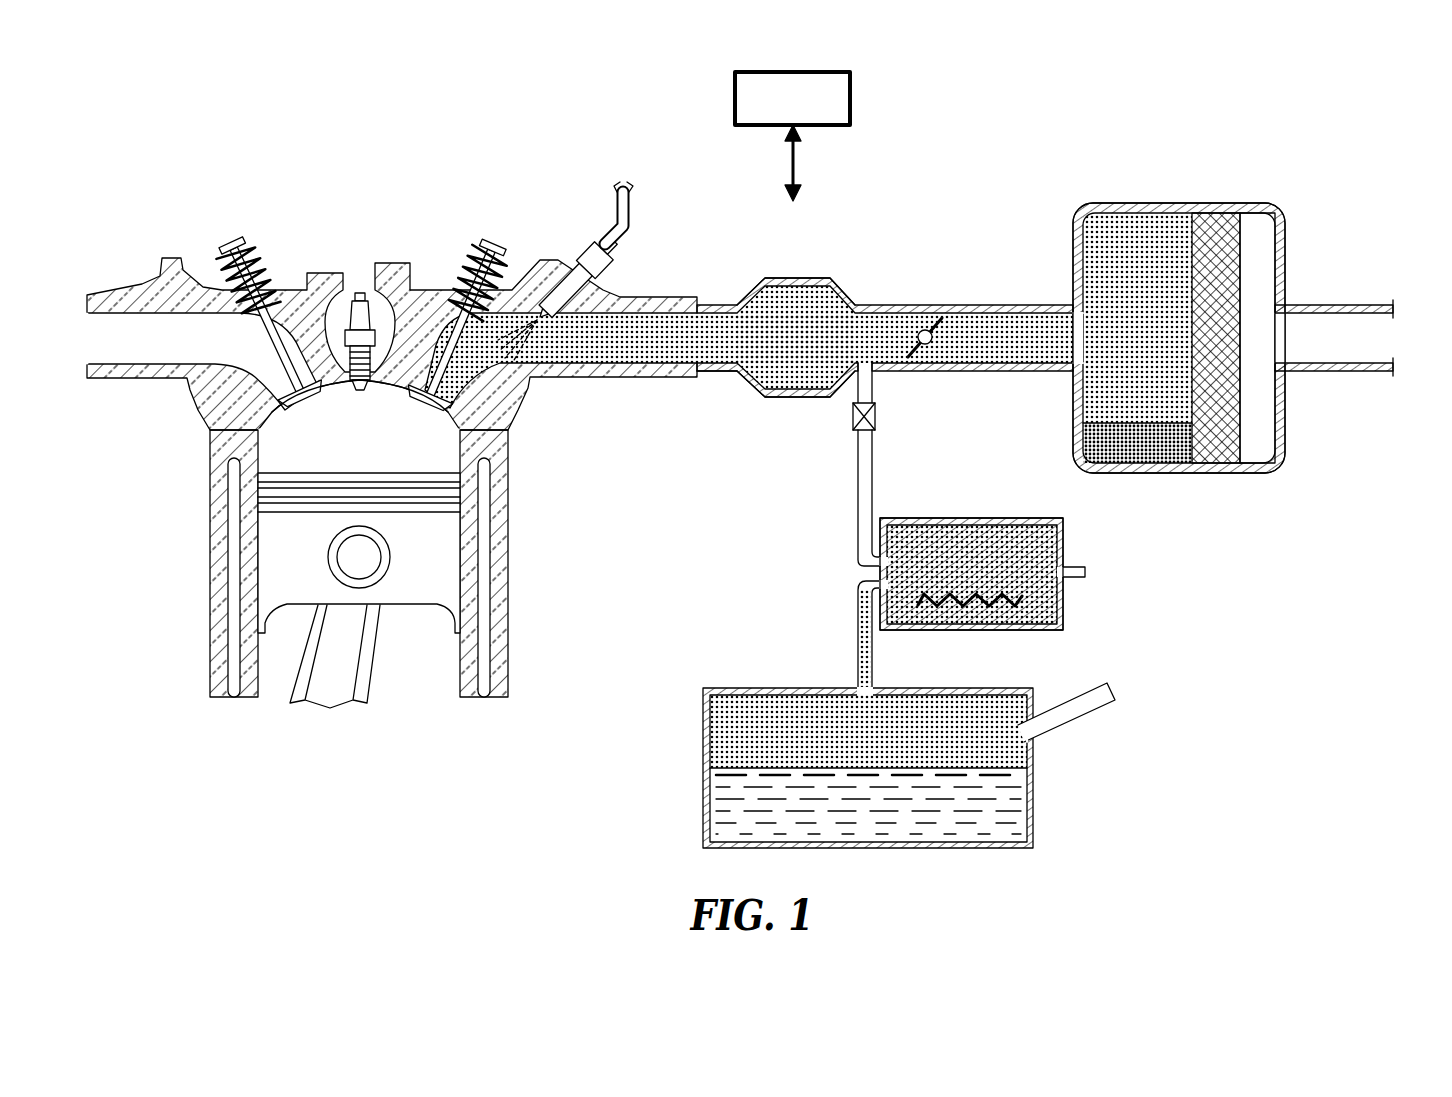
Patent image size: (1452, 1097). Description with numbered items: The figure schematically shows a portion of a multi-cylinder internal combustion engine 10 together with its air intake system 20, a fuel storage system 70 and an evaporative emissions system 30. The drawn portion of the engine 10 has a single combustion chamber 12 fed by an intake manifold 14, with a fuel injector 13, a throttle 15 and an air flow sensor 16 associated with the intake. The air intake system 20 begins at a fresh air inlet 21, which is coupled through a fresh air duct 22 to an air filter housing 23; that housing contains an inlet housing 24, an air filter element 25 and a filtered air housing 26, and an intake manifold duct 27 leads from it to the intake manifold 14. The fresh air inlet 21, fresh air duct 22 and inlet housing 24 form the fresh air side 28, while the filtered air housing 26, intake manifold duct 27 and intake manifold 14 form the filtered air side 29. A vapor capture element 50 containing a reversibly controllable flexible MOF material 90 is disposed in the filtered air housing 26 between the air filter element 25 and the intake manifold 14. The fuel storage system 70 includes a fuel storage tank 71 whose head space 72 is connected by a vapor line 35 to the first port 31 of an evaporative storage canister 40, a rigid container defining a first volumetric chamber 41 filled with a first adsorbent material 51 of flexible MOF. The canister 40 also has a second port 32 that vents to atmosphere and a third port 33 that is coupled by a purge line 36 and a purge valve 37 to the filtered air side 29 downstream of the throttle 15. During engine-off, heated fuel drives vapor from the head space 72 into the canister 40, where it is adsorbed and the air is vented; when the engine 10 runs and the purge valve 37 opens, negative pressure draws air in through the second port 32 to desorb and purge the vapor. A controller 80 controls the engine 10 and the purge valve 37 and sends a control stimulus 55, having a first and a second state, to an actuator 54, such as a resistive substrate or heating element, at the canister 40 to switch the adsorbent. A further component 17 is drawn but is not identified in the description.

The internal combustion engine 10 is at (359, 205).
The combustion chamber 12 is at (347, 439).
The fuel injector 13 is at (572, 262).
The intake manifold 14 is at (678, 292).
The throttle 15 is at (918, 333).
The air flow sensor 16 is at (800, 277).
The exhaust branch passage 17 is at (872, 370).
The air intake system 20 is at (1333, 229).
The fresh air inlet 21 is at (1380, 340).
The fresh air duct 22 is at (1368, 307).
The air filter housing 23 is at (1213, 480).
The inlet housing 24 is at (1258, 410).
The air filter element 25 is at (1213, 237).
The filtered air housing 26 is at (1115, 237).
The intake manifold duct 27 is at (715, 377).
The fresh air side 28 is at (1347, 343).
The filtered air side 29 is at (1102, 387).
The evaporative emissions system 30 is at (757, 573).
The first port 31 is at (880, 585).
The second port 32 is at (1085, 572).
The third port 33 is at (880, 562).
The vapor line 35 is at (853, 637).
The purge line 36 is at (853, 507).
The purge valve 37 is at (853, 415).
The evaporative storage canister 40 is at (1063, 597).
The first volumetric chamber 41 is at (963, 520).
The vapor capture element 50 is at (1150, 420).
The first adsorbent material 51 is at (1006, 540).
The actuator 54 is at (947, 603).
The control stimulus 55 is at (970, 612).
The fuel storage system 70 is at (703, 797).
The fuel storage tank 71 is at (1037, 790).
The head space 72 is at (727, 732).
The controller 80 is at (781, 110).
The flexible MOF material 90 is at (1140, 450).